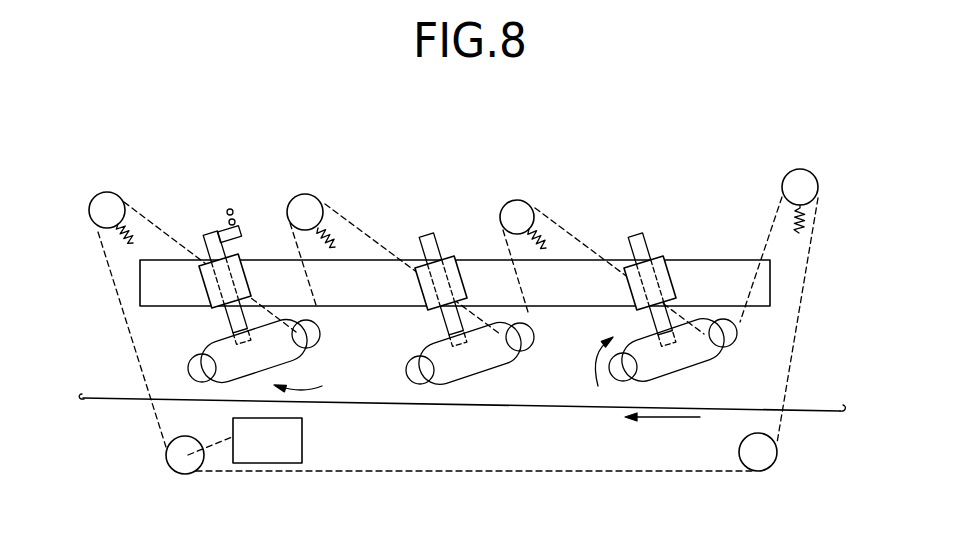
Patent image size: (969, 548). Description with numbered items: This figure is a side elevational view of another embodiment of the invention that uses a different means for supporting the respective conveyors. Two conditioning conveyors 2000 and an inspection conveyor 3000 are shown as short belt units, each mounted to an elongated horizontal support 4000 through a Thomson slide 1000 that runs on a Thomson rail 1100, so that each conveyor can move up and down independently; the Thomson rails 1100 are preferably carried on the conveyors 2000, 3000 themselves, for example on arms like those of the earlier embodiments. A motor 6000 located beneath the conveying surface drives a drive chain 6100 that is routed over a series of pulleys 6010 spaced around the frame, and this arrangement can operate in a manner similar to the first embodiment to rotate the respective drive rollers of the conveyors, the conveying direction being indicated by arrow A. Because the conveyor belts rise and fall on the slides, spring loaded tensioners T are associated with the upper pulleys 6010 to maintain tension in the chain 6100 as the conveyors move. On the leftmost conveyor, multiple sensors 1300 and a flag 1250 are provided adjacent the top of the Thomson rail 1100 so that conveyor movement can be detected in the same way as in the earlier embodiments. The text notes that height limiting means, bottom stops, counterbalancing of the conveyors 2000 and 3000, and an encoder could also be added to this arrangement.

The Thomson slide 1000 is at (286, 279).
The Thomson rail 1100 is at (208, 255).
The flag 1250 is at (243, 231).
The sensors 1300 is at (229, 222).
The conditioning conveyor 2000 is at (432, 233).
The inspection conveyor 3000 is at (322, 386).
The support 4000 is at (586, 296).
The motor 6000 is at (301, 443).
The pulleys 6010 is at (103, 203).
The drive chain 6100 is at (562, 470).
The spring loaded tensioner T is at (124, 238).
The conveying direction A is at (662, 432).